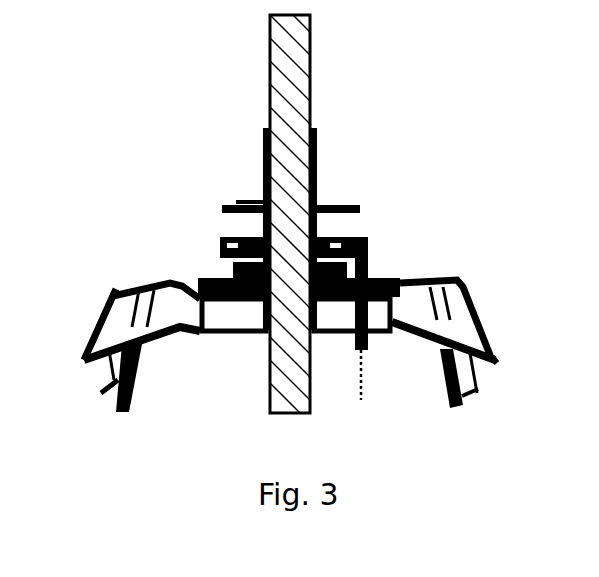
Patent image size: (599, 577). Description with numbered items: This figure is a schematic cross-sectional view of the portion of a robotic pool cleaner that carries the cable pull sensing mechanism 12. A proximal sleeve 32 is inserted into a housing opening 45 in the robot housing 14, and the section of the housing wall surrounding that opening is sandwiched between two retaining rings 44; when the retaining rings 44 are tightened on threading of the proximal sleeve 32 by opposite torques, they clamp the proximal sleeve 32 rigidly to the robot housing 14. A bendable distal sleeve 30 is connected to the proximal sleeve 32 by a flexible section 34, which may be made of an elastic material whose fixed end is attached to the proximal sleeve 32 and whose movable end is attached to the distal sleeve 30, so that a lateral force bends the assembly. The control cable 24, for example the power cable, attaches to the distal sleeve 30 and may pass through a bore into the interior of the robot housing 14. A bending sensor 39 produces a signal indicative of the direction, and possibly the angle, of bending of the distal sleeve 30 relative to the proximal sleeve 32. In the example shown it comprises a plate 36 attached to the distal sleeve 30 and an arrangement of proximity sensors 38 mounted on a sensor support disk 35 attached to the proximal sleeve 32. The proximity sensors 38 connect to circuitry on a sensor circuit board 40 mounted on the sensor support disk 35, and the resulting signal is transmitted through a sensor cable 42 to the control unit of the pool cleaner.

The cable pull sensing mechanism 12 is at (113, 108).
The robot housing 14 is at (150, 332).
The control cable 24 is at (275, 75).
The distal sleeve 30 is at (313, 173).
The proximal sleeve 32 is at (268, 320).
The flexible section 34 is at (268, 214).
The sensor support disk 35 is at (217, 261).
The plate 36 is at (243, 204).
The proximity sensors 38 is at (323, 238).
The bending sensor 39 is at (376, 203).
The sensor circuit board 40 is at (236, 247).
The sensor cable 42 is at (363, 373).
The retaining rings 44 is at (343, 273).
The housing opening 45 is at (260, 289).